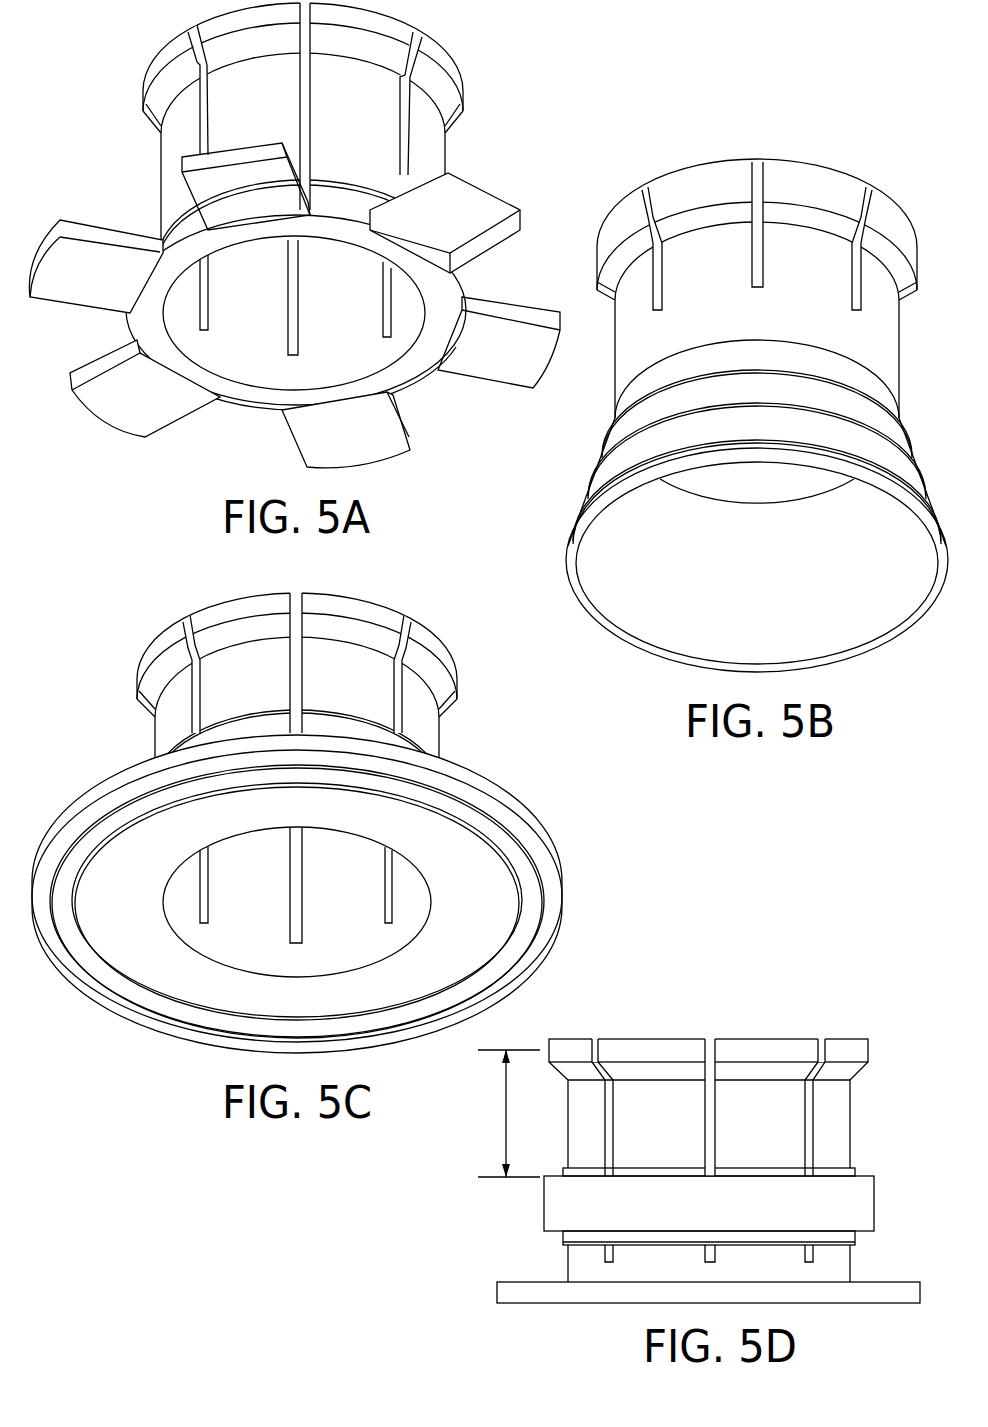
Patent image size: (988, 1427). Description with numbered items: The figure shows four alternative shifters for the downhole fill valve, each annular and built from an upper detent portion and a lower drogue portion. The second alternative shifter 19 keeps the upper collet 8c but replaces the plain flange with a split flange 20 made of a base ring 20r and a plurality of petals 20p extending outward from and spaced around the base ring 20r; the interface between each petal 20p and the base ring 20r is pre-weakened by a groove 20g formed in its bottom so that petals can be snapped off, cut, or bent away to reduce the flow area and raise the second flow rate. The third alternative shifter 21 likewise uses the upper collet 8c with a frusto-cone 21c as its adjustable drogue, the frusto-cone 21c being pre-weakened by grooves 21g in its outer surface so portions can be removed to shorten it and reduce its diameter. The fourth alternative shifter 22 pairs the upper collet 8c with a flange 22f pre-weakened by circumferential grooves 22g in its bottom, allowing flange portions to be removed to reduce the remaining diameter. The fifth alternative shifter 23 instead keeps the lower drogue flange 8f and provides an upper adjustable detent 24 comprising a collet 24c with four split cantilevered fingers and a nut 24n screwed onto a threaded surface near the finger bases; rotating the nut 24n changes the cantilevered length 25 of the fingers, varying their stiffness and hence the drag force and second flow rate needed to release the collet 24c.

In FIG. 5A, the second alternative shifter 19 is at (86, 50).
In FIG. 5A, the collet 8c is at (443, 70).
In FIG. 5B, the collet 8c is at (807, 173).
In FIG. 5C, the collet 8c is at (363, 615).
In FIG. 5A, the split flange 20 is at (442, 292).
In FIG. 5A, the groove 20g is at (383, 392).
In FIG. 5A, the base ring 20r is at (230, 398).
In FIG. 5A, the petals 20p is at (374, 455).
In FIG. 5B, the third alternative shifter 21 is at (627, 130).
In FIG. 5B, the grooves 21g is at (623, 410).
In FIG. 5B, the frusto-cone 21c is at (588, 487).
In FIG. 5C, the fourth alternative shifter 22 is at (94, 604).
In FIG. 5C, the flange 22f is at (497, 793).
In FIG. 5C, the grooves 22g is at (540, 900).
In FIG. 5D, the fifth alternative shifter 23 is at (881, 1012).
In FIG. 5D, the adjustable detent 24 is at (696, 1128).
In FIG. 5D, the collet 24c is at (757, 1048).
In FIG. 5D, the nut 24n is at (858, 1200).
In FIG. 5D, the cantilevered length 25 is at (503, 1113).
In FIG. 5D, the flange 8f is at (497, 1290).